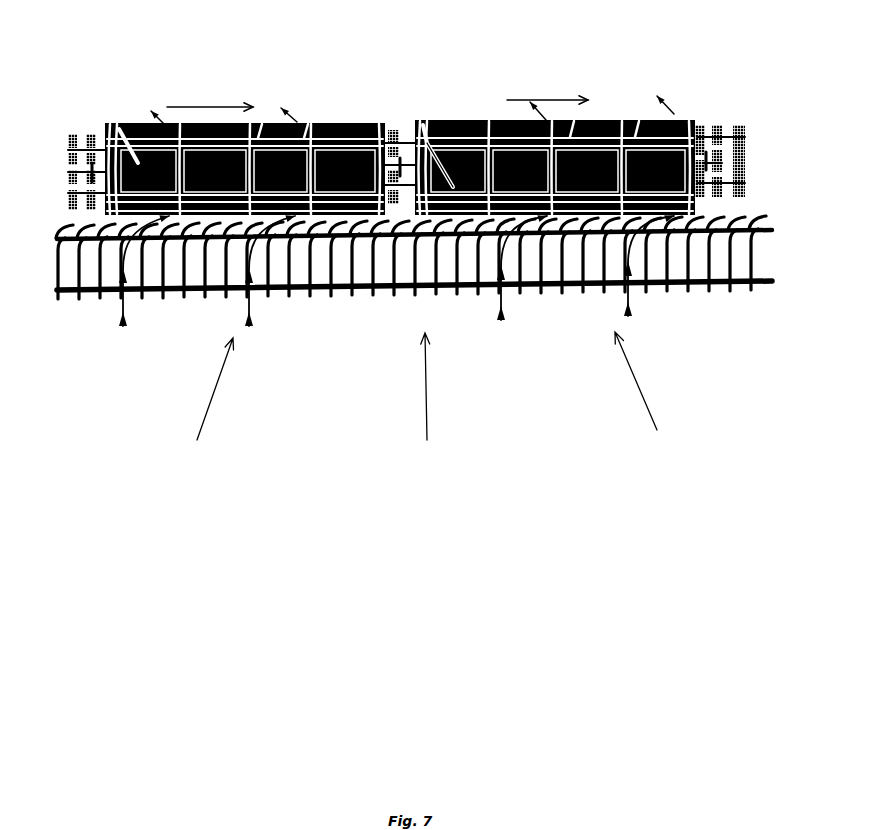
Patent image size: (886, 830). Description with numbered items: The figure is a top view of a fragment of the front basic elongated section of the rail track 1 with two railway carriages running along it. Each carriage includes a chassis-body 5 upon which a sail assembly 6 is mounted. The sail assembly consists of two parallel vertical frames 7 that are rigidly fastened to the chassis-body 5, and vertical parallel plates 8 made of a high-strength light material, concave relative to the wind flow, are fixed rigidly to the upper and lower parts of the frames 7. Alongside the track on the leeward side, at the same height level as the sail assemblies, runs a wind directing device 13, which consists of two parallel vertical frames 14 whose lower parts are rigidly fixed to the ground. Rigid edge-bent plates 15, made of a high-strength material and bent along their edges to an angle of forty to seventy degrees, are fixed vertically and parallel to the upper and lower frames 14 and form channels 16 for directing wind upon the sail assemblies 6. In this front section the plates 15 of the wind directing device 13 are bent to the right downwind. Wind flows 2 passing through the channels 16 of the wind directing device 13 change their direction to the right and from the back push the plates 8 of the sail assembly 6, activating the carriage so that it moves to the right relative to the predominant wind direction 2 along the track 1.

The track 1 is at (720, 137).
The wind flows 2 is at (213, 408).
The chassis-body 5 is at (138, 163).
The sail assembly 6 is at (308, 133).
The vertical frames 7 is at (535, 123).
The plates 8 is at (637, 126).
The wind directing device 13 is at (443, 298).
The vertical frames 14 is at (713, 232).
The edge-bent plates 15 is at (245, 263).
The channels 16 is at (317, 270).